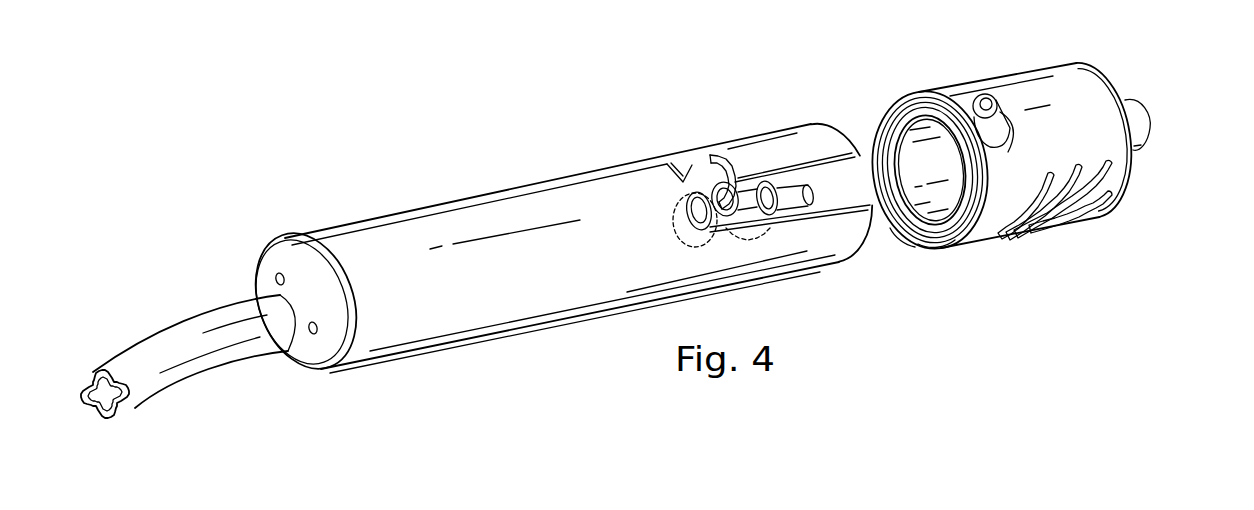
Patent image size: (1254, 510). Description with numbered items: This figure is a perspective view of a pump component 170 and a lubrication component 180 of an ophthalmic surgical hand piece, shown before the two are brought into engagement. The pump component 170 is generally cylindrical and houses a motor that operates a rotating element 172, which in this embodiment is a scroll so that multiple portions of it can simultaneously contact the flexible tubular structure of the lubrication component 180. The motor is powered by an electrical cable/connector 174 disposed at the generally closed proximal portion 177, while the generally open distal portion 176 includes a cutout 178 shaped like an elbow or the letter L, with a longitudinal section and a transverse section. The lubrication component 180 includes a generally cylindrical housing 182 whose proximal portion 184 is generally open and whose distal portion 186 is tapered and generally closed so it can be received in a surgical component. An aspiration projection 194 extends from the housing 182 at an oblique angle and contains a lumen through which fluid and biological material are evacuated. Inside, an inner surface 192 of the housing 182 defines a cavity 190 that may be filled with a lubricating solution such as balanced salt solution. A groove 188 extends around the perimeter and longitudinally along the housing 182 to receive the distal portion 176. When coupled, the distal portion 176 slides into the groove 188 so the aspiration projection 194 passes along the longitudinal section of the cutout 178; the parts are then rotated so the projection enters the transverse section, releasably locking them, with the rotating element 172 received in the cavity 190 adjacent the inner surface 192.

The pump component 170 is at (488, 155).
The rotating element 172 is at (704, 154).
The electrical cable/connector 174 is at (225, 304).
The distal portion 176 is at (807, 124).
The proximal portion 177 is at (316, 374).
The cutout 178 is at (678, 166).
The lubrication component 180 is at (1056, 256).
The housing 182 is at (1010, 73).
The proximal portion 184 is at (894, 103).
The distal portion 186 is at (1151, 131).
The groove 188 is at (930, 243).
The cavity 190 is at (912, 155).
The inner surface 192 is at (902, 232).
The aspiration projection 194 is at (994, 92).